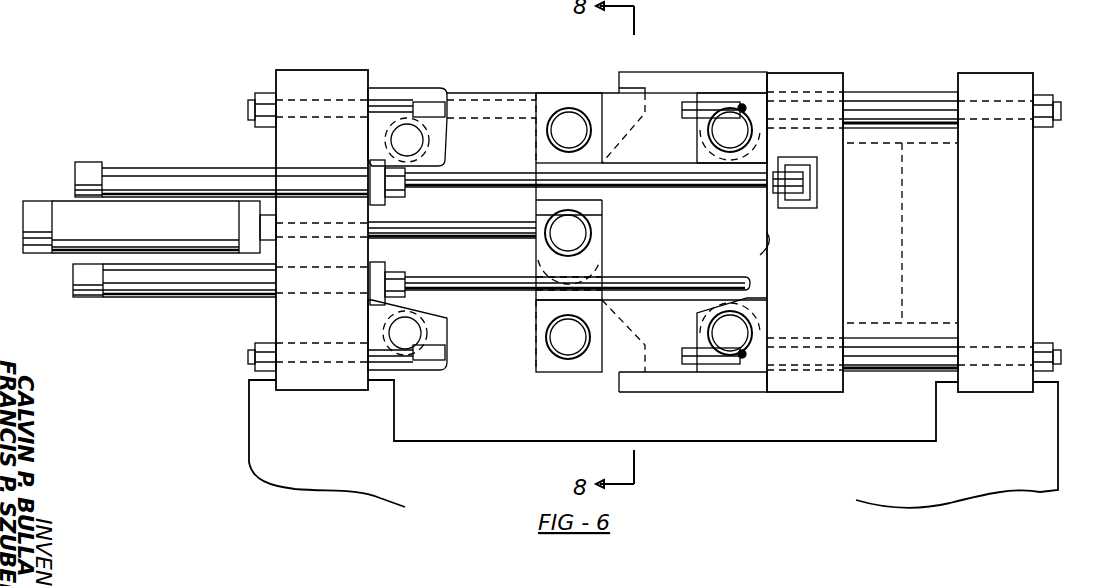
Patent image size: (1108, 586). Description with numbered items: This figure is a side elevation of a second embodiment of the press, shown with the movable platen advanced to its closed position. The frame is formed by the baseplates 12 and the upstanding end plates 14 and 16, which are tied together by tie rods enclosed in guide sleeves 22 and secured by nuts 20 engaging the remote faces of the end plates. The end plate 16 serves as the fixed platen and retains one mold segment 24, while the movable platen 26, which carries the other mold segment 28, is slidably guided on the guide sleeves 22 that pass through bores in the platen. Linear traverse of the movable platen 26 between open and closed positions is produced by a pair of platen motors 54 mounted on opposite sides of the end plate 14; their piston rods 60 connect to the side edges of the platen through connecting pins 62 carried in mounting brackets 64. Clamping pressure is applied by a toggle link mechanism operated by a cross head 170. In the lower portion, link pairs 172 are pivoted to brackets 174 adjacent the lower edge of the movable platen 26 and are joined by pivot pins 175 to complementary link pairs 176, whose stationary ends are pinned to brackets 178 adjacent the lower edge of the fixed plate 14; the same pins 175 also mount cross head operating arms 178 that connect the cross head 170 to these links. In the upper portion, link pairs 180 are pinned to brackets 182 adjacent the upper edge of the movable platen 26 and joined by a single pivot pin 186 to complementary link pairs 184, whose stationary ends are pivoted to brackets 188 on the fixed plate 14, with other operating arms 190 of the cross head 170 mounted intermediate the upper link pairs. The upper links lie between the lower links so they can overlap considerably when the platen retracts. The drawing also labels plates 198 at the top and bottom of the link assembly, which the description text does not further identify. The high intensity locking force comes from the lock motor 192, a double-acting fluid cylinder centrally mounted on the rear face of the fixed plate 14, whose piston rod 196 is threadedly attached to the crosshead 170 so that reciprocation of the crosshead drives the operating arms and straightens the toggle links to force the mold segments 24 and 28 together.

The baseplate 12 is at (275, 428).
The end plate 14 is at (302, 144).
The end plate 16 is at (997, 226).
The nut 20 is at (262, 93).
The guide sleeve 22 is at (893, 92).
The mold segment 24 is at (932, 200).
The movable platen 26 is at (780, 250).
The mold segment 28 is at (880, 166).
The platen motor 54 is at (135, 175).
The piston rod 60 is at (466, 186).
The connecting pin 62 is at (780, 212).
The mounting bracket 64 is at (815, 203).
The cross head 170 is at (598, 228).
The link pair 172 is at (674, 388).
The bracket 174 is at (760, 308).
The pivot pin 175 is at (575, 343).
The complementary link pair 176 is at (508, 367).
The bracket / cross head operating arm 178 is at (440, 312).
The link pair 180 is at (660, 123).
The bracket 182 is at (703, 150).
The complementary link pair 184 is at (478, 112).
The pivot pin 186 is at (572, 120).
The bracket 188 is at (432, 100).
The operating arm 190 is at (545, 200).
The lock motor 192 is at (66, 215).
The piston rod 196 is at (456, 237).
The cover plates 198 is at (637, 82).